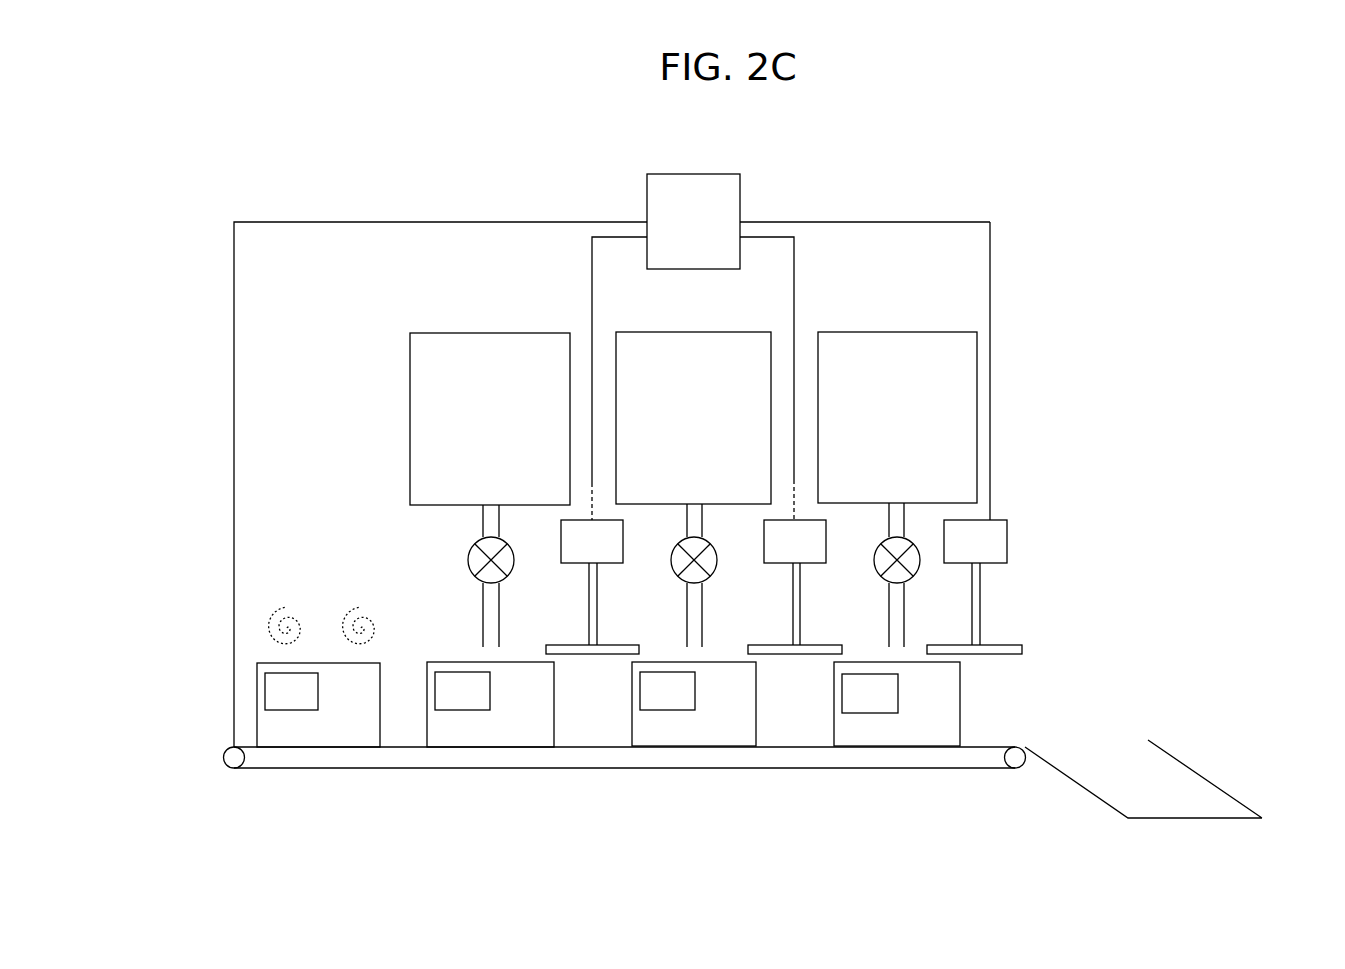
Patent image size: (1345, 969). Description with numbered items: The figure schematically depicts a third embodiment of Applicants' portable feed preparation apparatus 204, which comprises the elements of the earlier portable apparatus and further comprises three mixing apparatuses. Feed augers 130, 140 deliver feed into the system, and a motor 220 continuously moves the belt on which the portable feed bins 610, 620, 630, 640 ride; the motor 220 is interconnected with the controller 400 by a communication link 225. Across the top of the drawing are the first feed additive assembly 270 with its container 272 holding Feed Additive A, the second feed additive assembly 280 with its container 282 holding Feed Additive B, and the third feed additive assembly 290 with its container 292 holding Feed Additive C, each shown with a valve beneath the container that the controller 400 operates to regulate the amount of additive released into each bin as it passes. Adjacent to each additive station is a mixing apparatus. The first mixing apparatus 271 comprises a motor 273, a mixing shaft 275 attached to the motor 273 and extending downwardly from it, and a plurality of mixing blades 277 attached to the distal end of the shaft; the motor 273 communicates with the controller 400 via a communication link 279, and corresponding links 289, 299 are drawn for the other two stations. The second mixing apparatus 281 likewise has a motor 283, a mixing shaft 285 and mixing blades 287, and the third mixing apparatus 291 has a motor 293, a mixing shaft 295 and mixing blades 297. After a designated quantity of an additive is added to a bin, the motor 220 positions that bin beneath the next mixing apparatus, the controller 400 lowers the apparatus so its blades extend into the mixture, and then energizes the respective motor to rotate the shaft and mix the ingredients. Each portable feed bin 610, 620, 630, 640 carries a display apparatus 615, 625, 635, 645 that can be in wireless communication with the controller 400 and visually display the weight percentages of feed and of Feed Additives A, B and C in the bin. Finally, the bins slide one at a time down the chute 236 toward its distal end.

The portable feed preparation apparatus 204 is at (976, 142).
The controller 400 is at (679, 233).
The communication link 225 is at (235, 517).
The communication line 299 is at (988, 284).
The communication link 279 is at (592, 262).
The communication line 289 is at (793, 293).
The feed additive assembly 270 is at (489, 330).
The container 272 is at (476, 390).
The mixing apparatus 271 is at (556, 573).
The motor 273 is at (578, 554).
The mixing shaft 275 is at (592, 592).
The mixing blades 277 is at (591, 656).
The feed additive assembly 280 is at (746, 330).
The container 282 is at (679, 390).
The mixing apparatus 281 is at (771, 572).
The motor 283 is at (781, 554).
The mixing shaft 285 is at (793, 595).
The mixing blades 287 is at (795, 655).
The feed additive assembly 290 is at (894, 330).
The container 292 is at (883, 390).
The mixing apparatus 291 is at (1024, 543).
The motor 293 is at (961, 554).
The mixing shaft 295 is at (973, 596).
The mixing blades 297 is at (991, 655).
The feed auger 130 is at (281, 626).
The feed auger 140 is at (361, 626).
The portable feed bin 640 is at (331, 736).
The display apparatus 645 is at (278, 703).
The portable feed bin 630 is at (503, 735).
The display apparatus 635 is at (448, 702).
The portable feed bin 620 is at (711, 723).
The display apparatus 625 is at (654, 703).
The portable feed bin 610 is at (918, 734).
The display apparatus 615 is at (856, 705).
The motor 220 is at (228, 767).
The chute 236 is at (1222, 807).